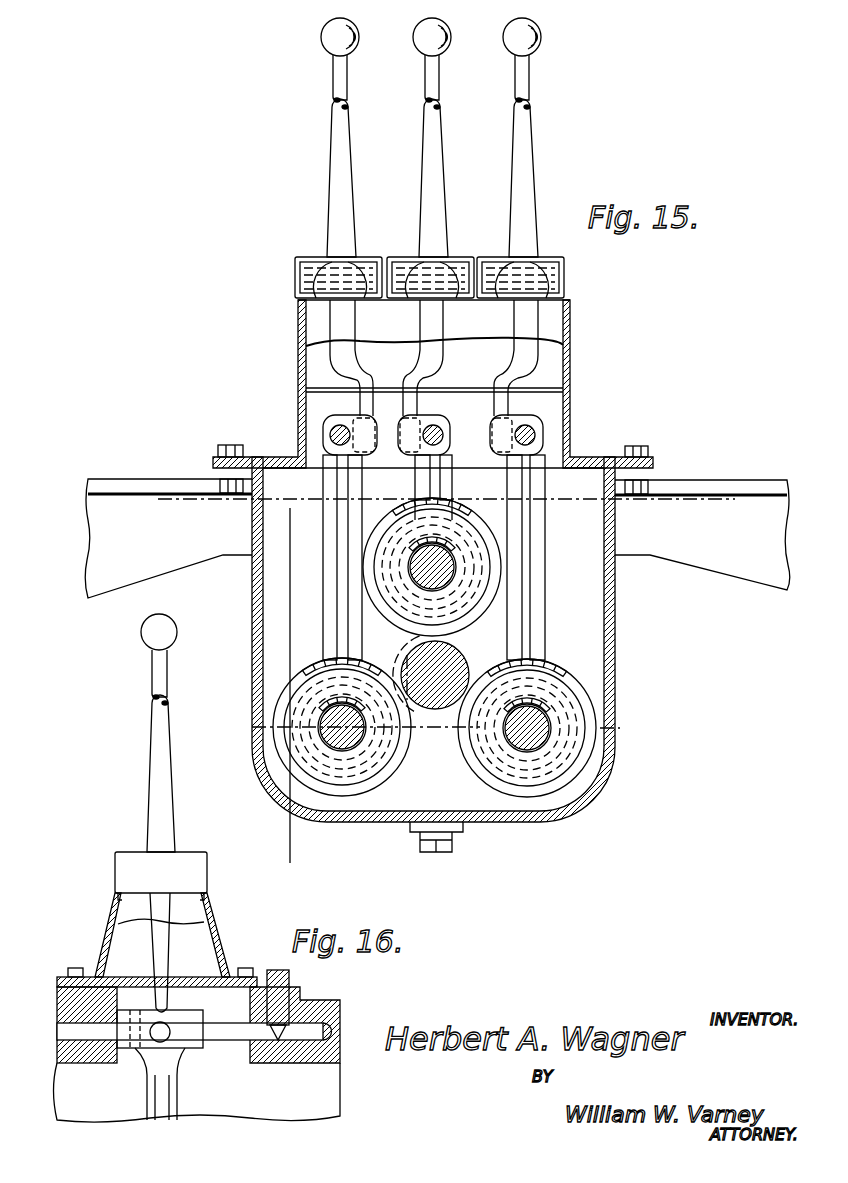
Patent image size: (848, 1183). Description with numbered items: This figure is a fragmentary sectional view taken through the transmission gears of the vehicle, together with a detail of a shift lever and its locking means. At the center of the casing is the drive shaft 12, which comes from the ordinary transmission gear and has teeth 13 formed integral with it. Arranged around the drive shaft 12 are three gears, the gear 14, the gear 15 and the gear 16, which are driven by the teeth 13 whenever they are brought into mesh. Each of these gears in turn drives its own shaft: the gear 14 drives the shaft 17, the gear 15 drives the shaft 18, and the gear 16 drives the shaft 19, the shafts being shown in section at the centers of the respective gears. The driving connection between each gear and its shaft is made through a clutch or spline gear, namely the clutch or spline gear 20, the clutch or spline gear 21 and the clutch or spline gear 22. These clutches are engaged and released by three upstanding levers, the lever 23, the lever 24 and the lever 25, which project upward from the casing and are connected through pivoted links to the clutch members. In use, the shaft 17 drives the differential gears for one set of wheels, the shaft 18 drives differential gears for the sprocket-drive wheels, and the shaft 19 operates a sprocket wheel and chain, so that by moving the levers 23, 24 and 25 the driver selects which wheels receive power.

In FIG. 15, the drive shaft 12 is at (440, 690).
In FIG. 15, the teeth 13 is at (470, 672).
In FIG. 15, the gear 14 is at (573, 722).
In FIG. 15, the gear 15 is at (283, 763).
In FIG. 15, the gear 16 is at (495, 528).
In FIG. 15, the shaft 17 is at (540, 745).
In FIG. 15, the shaft 18 is at (320, 722).
In FIG. 15, the shaft 19 is at (442, 577).
In FIG. 15, the clutch or spline gear 20 is at (184, 484).
In FIG. 15, the clutch or spline gear 21 is at (282, 836).
In FIG. 15, the clutch or spline gear 22 is at (417, 550).
In FIG. 15, the lever 23 is at (530, 197).
In FIG. 15, the lever 24 is at (345, 222).
In FIG. 16, the lever 24 is at (152, 805).
In FIG. 15, the lever 25 is at (440, 216).